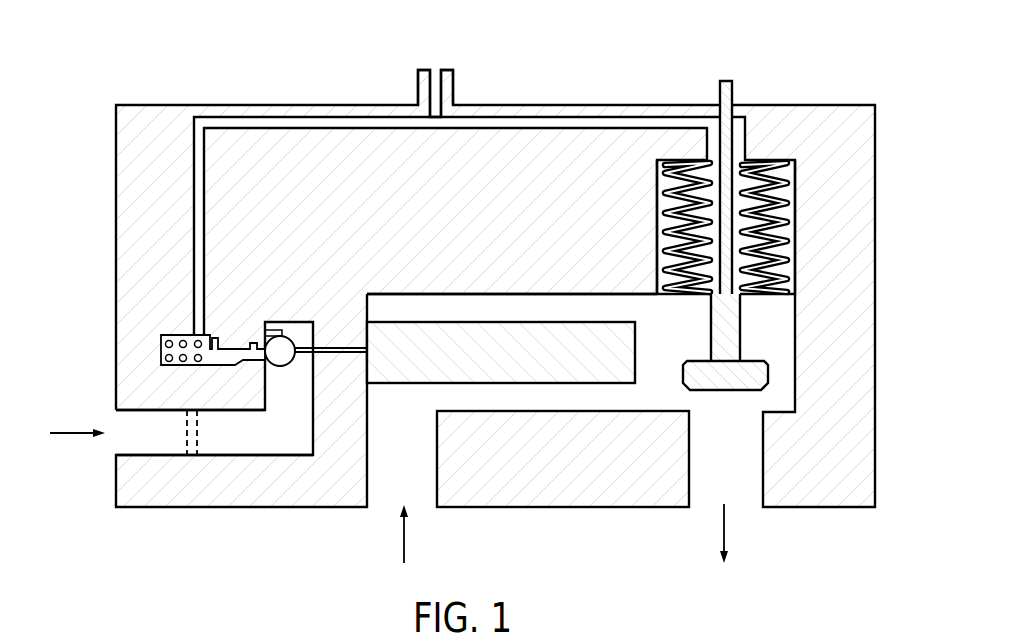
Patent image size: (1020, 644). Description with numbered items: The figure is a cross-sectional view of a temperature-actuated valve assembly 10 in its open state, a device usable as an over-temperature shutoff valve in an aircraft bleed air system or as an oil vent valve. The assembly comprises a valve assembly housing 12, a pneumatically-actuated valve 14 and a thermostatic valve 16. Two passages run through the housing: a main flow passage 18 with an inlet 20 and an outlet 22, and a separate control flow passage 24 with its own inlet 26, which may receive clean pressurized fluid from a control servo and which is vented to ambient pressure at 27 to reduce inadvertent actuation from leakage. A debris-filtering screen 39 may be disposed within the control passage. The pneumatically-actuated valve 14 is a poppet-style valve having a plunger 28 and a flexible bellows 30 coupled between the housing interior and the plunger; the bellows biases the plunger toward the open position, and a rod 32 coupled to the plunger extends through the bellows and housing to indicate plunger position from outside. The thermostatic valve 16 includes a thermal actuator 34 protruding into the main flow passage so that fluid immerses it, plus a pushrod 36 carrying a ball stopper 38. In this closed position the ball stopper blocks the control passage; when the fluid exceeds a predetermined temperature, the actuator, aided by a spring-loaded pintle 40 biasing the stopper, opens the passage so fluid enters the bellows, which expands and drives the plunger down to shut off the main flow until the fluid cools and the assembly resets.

The temperature-actuated valve assembly 10 is at (455, 288).
The valve assembly housing 12 is at (115, 250).
The pneumatically-actuated valve 14 is at (764, 150).
The thermostatic valve 16 is at (340, 325).
The main flow passage 18 is at (550, 405).
The inlet 20 is at (420, 502).
The outlet 22 is at (707, 500).
The control flow passage 24 is at (480, 128).
The inlet 26 is at (113, 415).
The vent 27 is at (453, 84).
The plunger 28 is at (715, 332).
The flexible bellows 30 is at (787, 233).
The rod 32 is at (723, 81).
The thermal actuator 34 is at (525, 366).
The pushrod 36 is at (338, 353).
The ball stopper 38 is at (277, 366).
The debris-filtering screen 39 is at (190, 455).
The spring-loaded pintle 40 is at (233, 343).